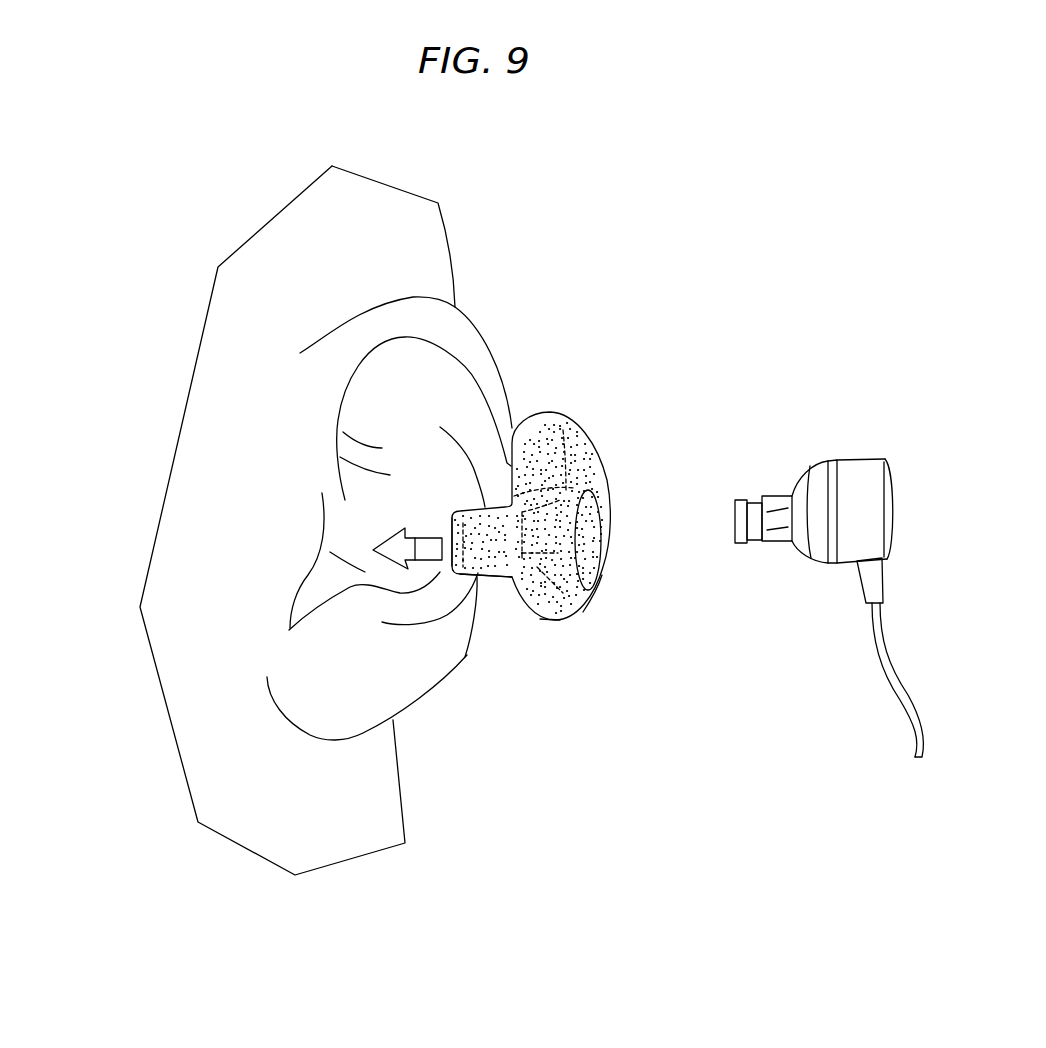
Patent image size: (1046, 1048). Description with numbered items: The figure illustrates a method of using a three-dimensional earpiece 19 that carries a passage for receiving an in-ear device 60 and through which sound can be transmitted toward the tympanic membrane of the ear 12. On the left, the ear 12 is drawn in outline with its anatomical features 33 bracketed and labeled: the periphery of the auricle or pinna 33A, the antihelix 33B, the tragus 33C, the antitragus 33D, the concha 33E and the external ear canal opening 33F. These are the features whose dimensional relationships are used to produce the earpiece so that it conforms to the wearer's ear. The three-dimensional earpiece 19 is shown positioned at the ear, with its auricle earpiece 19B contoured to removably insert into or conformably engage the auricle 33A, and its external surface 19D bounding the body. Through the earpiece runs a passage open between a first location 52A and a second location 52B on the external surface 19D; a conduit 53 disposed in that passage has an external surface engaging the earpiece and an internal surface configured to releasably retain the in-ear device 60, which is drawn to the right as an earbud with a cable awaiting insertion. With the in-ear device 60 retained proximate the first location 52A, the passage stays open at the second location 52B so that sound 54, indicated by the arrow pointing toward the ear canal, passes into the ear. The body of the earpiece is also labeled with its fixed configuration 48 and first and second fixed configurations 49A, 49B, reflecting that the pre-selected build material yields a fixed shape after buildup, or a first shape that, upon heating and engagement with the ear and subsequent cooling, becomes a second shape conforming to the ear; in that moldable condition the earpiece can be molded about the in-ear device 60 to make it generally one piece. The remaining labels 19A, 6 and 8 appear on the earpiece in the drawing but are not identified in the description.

The ear 12 is at (452, 330).
The three-dimensional earpiece 19 is at (599, 546).
The ear tip stem portion 19A is at (501, 576).
The auricle earpiece 19B is at (495, 507).
The three-dimensional earpiece external surface 19D is at (555, 622).
The anatomical features 33 is at (48, 301).
The auricle 33A is at (380, 381).
The antihelix 33B is at (440, 518).
The tragus 33C is at (315, 523).
The antitragus 33D is at (310, 603).
The concha 33E is at (345, 537).
The external ear canal opening 33F is at (360, 602).
The fixed configuration 48 is at (599, 516).
The first fixed configuration 49A is at (599, 516).
The second fixed configuration 49B is at (587, 468).
The first location 52A is at (577, 523).
The second location 52B is at (490, 576).
The conduit 53 is at (635, 540).
The sound 54 is at (407, 548).
The ear tip assembly 6 is at (644, 594).
The ear tip body 8 is at (593, 596).
The in-ear device 60 is at (853, 442).